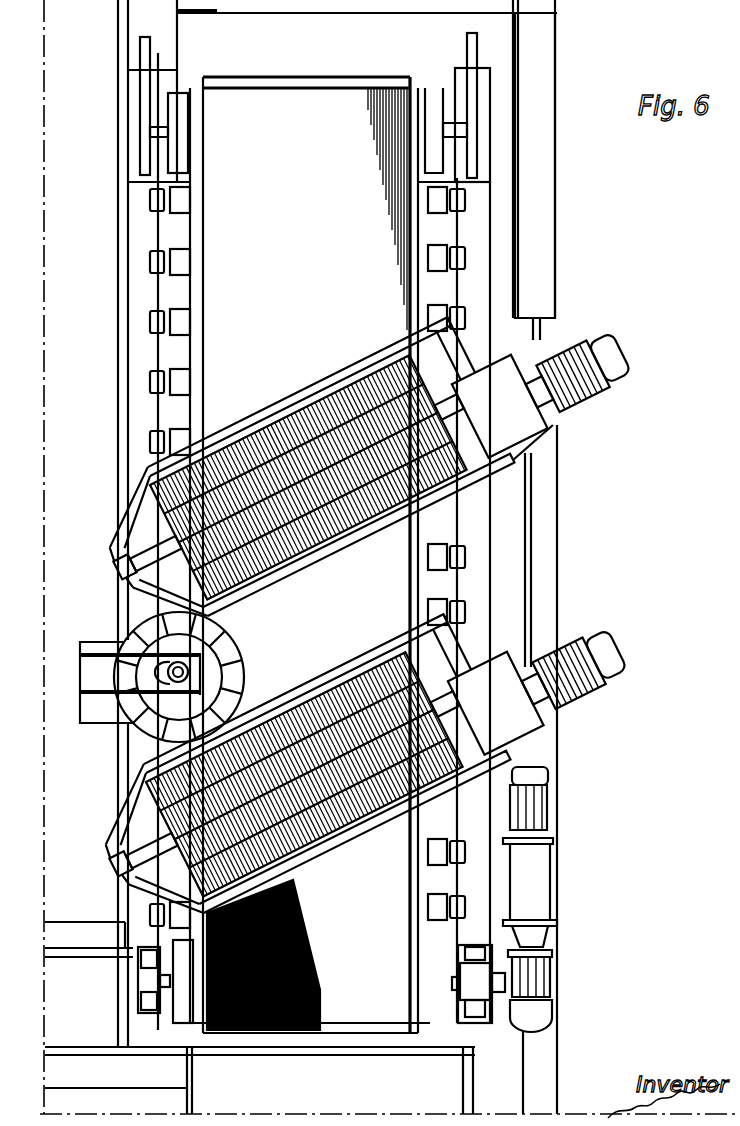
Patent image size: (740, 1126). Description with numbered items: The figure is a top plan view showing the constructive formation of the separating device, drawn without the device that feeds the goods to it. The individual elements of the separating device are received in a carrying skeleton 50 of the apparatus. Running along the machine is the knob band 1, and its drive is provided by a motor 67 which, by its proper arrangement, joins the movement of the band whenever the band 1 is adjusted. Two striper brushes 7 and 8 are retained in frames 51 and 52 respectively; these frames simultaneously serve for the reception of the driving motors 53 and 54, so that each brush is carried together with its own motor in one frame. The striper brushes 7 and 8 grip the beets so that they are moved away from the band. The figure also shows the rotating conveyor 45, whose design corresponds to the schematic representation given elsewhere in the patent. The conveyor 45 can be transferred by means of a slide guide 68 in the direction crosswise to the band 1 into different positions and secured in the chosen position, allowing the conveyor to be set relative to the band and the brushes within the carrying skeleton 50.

The knob band 1 is at (335, 100).
The striper brush 7 is at (343, 410).
The striper brush 8 is at (355, 692).
The rotating conveyor 45 is at (162, 710).
The carrying skeleton 50 is at (545, 262).
The frame 51 is at (262, 412).
The frame 52 is at (288, 698).
The driving motor 53 is at (585, 398).
The driving motor 54 is at (580, 690).
The motor 67 is at (540, 902).
The slide guide 68 is at (108, 680).